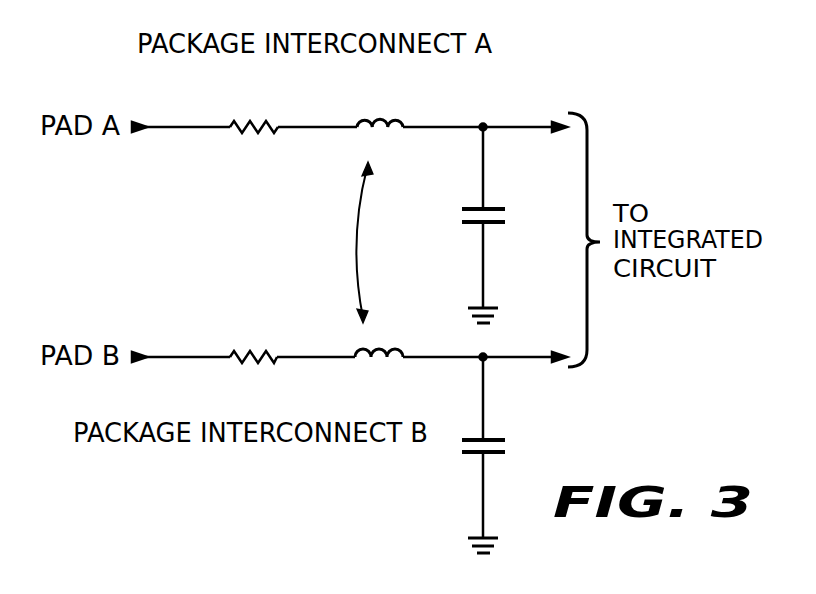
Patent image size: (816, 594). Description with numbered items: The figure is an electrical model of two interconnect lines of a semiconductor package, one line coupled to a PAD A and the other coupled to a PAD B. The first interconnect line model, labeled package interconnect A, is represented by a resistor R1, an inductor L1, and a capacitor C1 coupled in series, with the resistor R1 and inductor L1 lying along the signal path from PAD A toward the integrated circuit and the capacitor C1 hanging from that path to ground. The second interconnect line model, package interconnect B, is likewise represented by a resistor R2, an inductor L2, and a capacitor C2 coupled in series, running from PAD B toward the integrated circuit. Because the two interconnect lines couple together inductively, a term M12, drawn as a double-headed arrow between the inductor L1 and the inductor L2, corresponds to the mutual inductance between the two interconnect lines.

The resistor R1 is at (249, 118).
The inductor L1 is at (387, 112).
The resistor R2 is at (240, 364).
The inductor L2 is at (387, 360).
The capacitor C1 is at (505, 222).
The capacitor C2 is at (505, 440).
The mutual inductance M12 is at (357, 212).